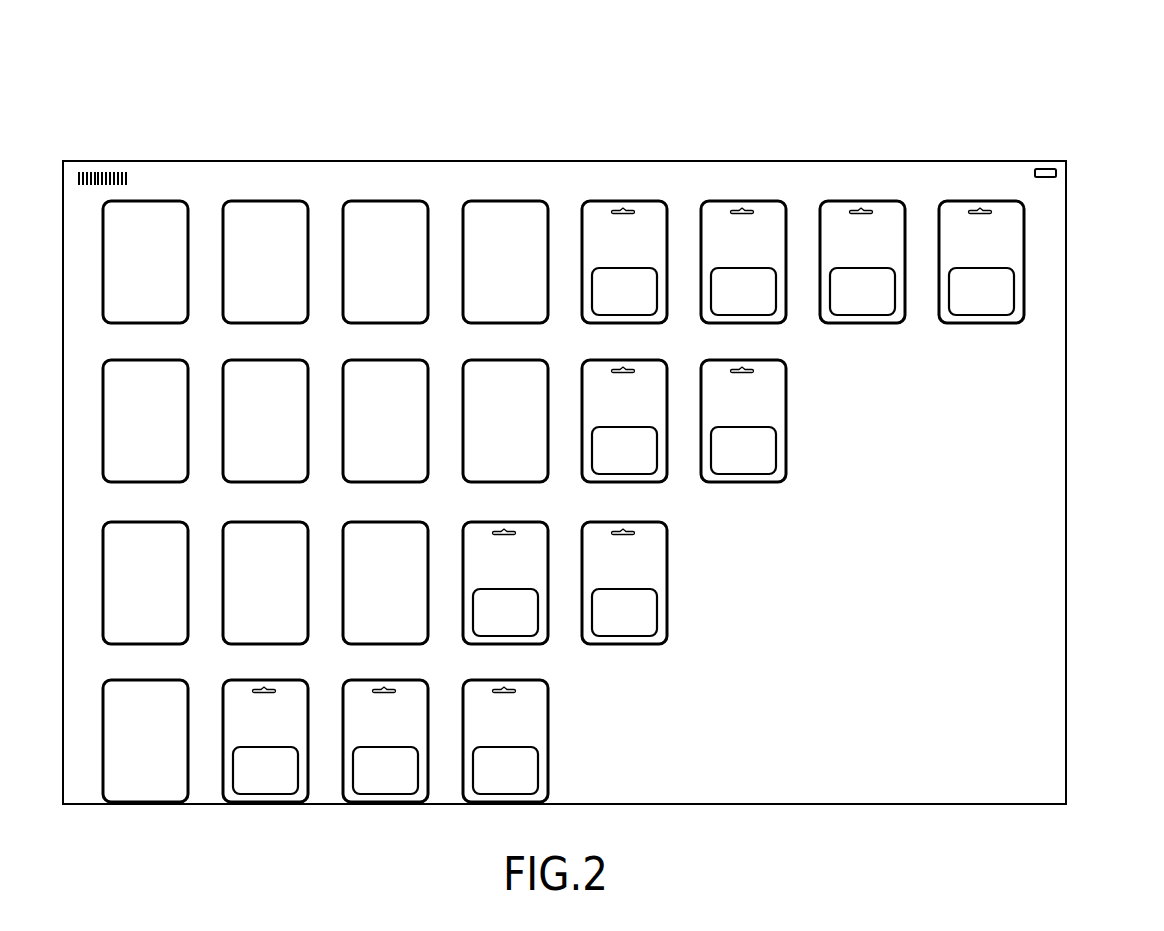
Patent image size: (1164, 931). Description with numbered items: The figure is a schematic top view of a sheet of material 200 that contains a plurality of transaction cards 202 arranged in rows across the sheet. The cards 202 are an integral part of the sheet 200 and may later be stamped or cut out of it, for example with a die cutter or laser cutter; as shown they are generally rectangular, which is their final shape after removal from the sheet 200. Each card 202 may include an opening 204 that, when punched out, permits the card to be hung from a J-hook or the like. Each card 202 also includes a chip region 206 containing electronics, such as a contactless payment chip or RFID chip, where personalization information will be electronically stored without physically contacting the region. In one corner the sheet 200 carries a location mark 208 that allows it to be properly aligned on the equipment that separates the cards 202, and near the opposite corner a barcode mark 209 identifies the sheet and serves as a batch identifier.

The sheet of material 200 is at (991, 114).
The transaction cards 202 is at (1025, 298).
The opening 204 is at (988, 210).
The chip region 206 is at (962, 315).
The location mark 208 is at (1057, 172).
The barcode mark 209 is at (105, 162).